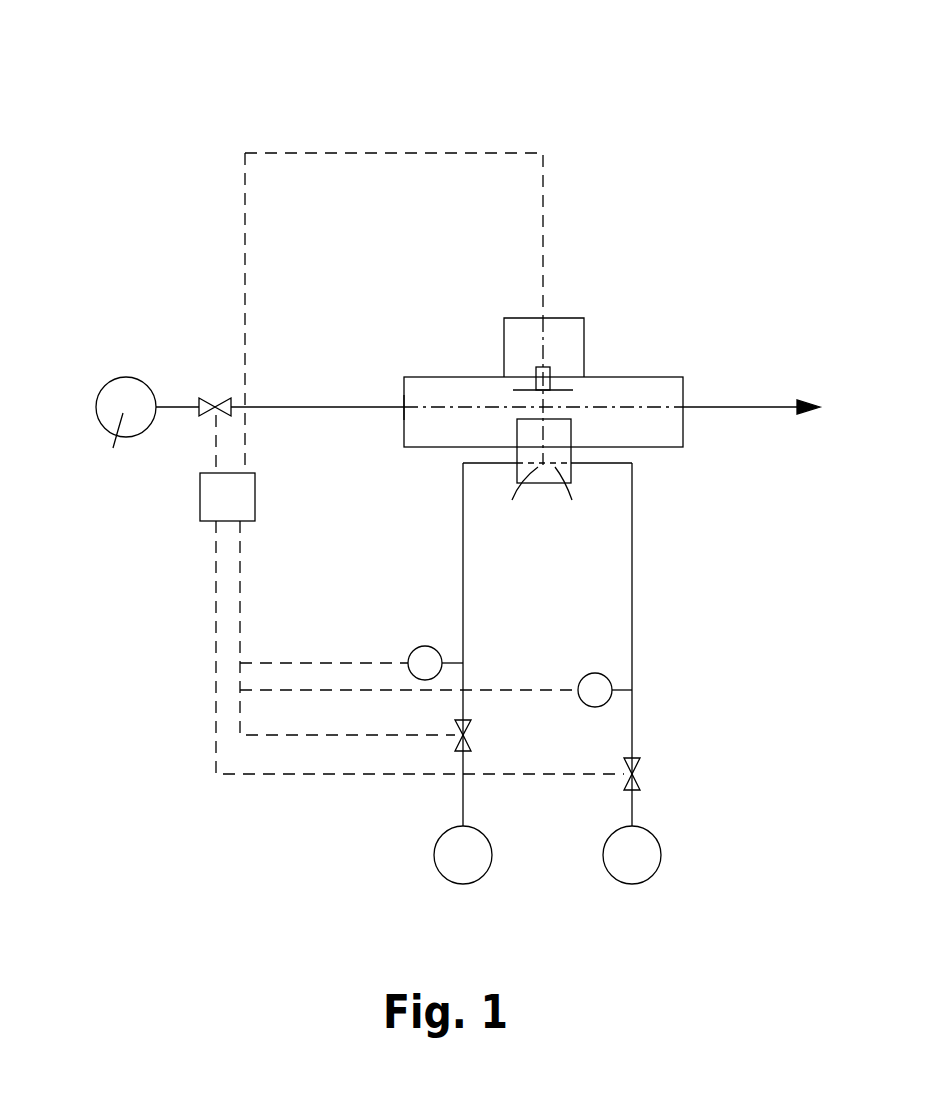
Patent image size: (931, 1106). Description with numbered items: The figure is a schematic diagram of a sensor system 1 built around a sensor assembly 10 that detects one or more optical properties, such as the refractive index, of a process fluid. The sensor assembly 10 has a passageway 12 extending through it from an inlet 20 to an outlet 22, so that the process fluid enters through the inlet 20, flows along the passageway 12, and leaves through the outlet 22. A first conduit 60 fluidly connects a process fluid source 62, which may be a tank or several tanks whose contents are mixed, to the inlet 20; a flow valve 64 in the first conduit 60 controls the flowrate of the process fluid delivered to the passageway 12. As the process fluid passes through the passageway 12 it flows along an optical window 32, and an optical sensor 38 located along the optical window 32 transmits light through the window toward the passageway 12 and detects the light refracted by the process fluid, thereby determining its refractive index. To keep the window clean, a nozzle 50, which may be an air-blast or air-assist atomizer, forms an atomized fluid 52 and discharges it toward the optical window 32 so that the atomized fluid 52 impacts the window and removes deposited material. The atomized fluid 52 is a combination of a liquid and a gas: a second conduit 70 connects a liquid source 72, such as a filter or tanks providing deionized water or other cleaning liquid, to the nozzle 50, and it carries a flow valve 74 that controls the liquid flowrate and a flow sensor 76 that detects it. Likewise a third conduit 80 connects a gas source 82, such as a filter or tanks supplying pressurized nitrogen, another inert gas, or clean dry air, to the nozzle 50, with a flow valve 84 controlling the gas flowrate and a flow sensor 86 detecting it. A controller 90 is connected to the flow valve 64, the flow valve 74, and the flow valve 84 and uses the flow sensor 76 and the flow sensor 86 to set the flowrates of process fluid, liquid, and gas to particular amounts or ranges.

The sensor system 1 is at (216, 79).
The sensor assembly 10 is at (602, 333).
The passageway 12 is at (648, 408).
The inlet 20 is at (404, 407).
The outlet 22 is at (685, 405).
The optical window 32 is at (557, 388).
The optical sensor 38 is at (535, 372).
The nozzle 50 is at (560, 452).
The atomized fluid 52 is at (543, 452).
The first conduit 60 is at (302, 405).
The process fluid source 62 is at (105, 383).
The flow valve 64 is at (223, 395).
The second conduit 70 is at (463, 617).
The liquid source 72 is at (443, 878).
The flow valve 74 is at (468, 727).
The flow sensor 76 is at (410, 650).
The third conduit 80 is at (632, 633).
The gas source 82 is at (628, 883).
The flow valve 84 is at (633, 760).
The flow sensor 86 is at (583, 702).
The controller 90 is at (201, 520).